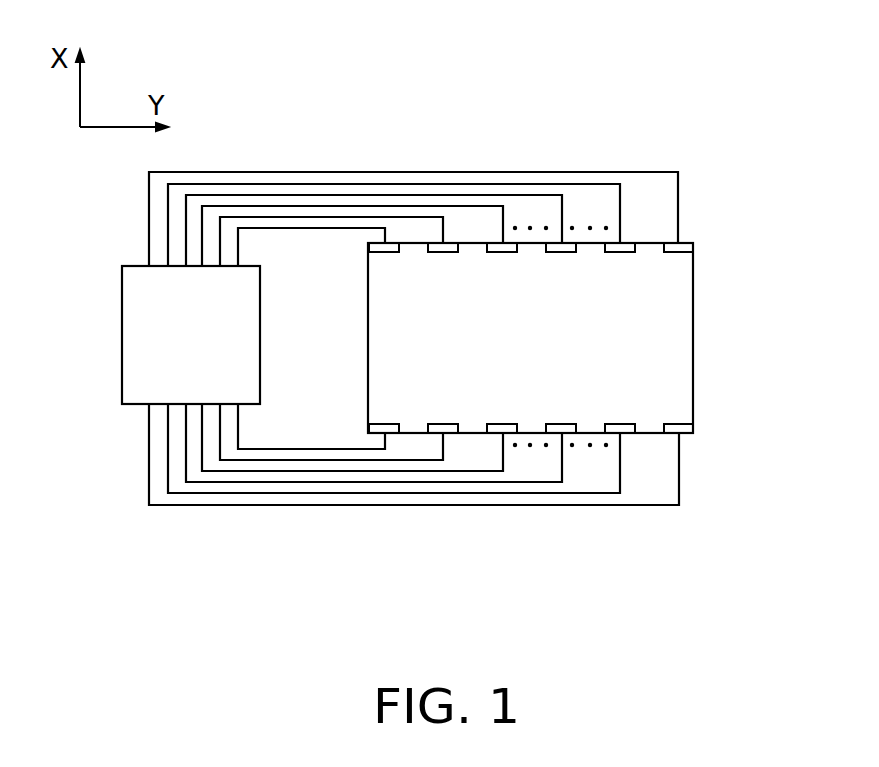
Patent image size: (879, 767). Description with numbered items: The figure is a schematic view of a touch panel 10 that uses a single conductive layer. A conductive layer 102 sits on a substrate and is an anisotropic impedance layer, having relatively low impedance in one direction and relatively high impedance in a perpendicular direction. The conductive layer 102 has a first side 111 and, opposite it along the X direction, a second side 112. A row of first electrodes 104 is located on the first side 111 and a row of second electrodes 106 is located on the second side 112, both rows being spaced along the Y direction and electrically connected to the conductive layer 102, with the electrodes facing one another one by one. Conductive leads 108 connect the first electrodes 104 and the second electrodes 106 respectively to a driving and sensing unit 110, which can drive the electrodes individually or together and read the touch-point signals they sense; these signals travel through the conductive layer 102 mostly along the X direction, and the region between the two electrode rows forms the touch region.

The touch panel 10 is at (436, 92).
The conductive layer 102 is at (668, 332).
The first electrodes 104 is at (679, 430).
The second electrodes 106 is at (675, 253).
The conductive leads 108 is at (366, 472).
The driving and sensing unit 110 is at (163, 335).
The first side 111 is at (650, 433).
The second side 112 is at (647, 243).